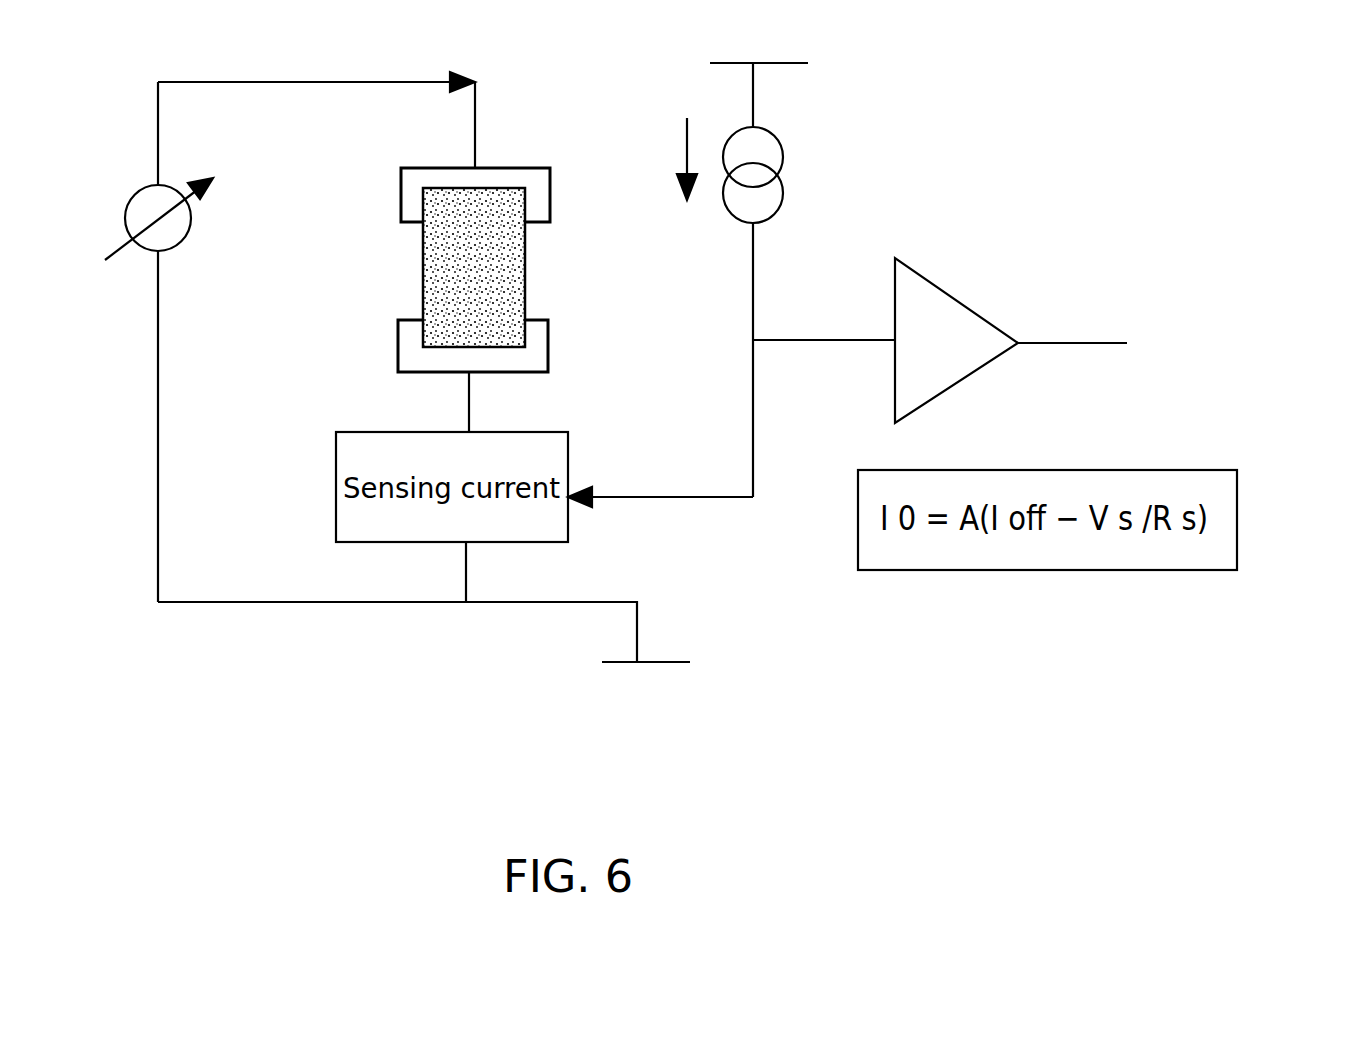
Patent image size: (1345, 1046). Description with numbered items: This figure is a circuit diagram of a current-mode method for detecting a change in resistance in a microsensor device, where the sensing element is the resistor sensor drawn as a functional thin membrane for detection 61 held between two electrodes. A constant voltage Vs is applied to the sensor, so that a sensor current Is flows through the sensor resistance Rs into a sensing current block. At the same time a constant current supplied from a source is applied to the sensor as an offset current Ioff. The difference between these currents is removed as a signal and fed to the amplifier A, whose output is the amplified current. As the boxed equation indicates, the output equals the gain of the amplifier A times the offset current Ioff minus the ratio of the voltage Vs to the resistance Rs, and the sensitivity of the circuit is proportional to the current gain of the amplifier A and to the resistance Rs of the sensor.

The functional thin membrane for detection 61 is at (875, 455).
The constant voltage Vs is at (144, 342).
The sensor current Is is at (316, 89).
The sensor resistance Rs is at (442, 270).
The offset current Ioff is at (731, 285).
The amplifier A is at (940, 340).